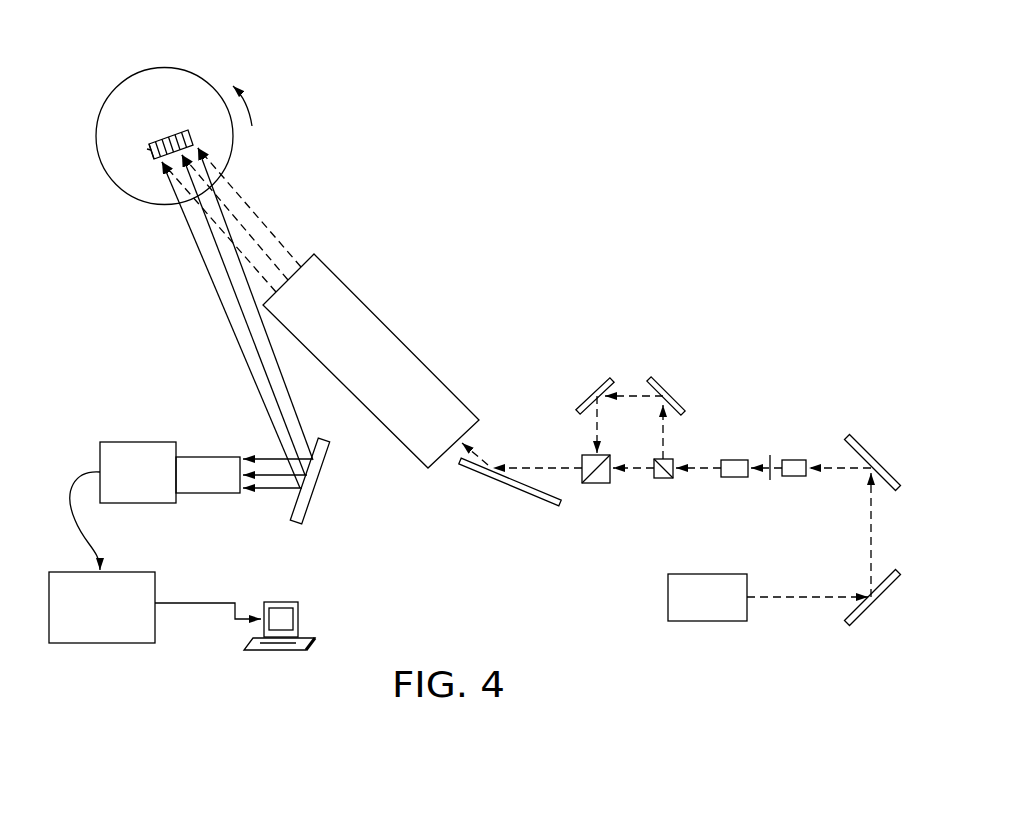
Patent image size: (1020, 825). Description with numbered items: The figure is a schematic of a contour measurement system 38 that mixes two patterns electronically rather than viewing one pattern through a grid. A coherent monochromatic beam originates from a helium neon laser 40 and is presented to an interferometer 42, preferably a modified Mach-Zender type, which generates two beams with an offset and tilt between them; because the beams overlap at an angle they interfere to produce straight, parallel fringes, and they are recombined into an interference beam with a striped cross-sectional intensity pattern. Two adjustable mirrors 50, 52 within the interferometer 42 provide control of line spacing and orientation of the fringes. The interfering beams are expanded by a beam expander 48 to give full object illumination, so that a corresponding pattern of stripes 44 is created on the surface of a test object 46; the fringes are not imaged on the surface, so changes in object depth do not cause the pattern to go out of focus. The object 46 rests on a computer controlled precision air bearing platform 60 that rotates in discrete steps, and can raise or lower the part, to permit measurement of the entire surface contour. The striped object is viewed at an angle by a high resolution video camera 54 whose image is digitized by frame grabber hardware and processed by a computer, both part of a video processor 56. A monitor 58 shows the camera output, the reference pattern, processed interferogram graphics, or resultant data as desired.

The contour measurement system 38 is at (527, 303).
The helium neon laser 40 is at (700, 608).
The interferometer 42 is at (713, 416).
The pattern of stripes 44 is at (181, 129).
The test object 46 is at (149, 152).
The beam expander 48 is at (437, 391).
The adjustable mirror 50 is at (788, 477).
The adjustable mirror 52 is at (733, 478).
The video camera 54 is at (138, 452).
The video processor 56 is at (120, 632).
The monitor 58 is at (300, 618).
The precision air bearing platform 60 is at (109, 95).